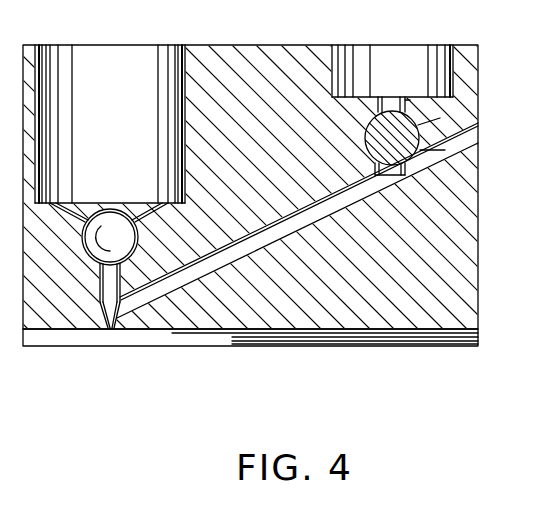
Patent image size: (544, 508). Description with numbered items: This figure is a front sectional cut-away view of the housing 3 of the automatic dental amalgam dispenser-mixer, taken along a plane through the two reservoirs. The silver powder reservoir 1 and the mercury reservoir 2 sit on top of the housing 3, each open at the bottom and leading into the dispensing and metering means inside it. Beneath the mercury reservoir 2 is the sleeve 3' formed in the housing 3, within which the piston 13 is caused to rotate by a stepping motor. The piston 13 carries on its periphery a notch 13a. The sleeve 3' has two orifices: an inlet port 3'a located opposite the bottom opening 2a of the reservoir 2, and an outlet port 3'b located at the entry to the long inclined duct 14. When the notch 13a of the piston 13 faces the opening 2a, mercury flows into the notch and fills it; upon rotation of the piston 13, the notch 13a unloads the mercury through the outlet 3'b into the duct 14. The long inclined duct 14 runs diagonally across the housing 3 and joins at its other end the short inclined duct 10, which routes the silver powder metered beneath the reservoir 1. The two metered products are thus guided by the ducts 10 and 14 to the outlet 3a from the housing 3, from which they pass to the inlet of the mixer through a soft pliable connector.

The reservoir 1 is at (113, 124).
The reservoir 2 is at (390, 74).
The bottom opening 2a is at (387, 100).
The housing 3 is at (250, 218).
The sleeve 3' is at (471, 160).
The inlet port 3'a is at (481, 115).
The outlet port 3'b is at (422, 182).
The outlet 3a is at (110, 330).
The short inclined duct 10 is at (108, 287).
The piston 13 is at (403, 136).
The notch 13a is at (403, 101).
The long inclined duct 14 is at (337, 203).